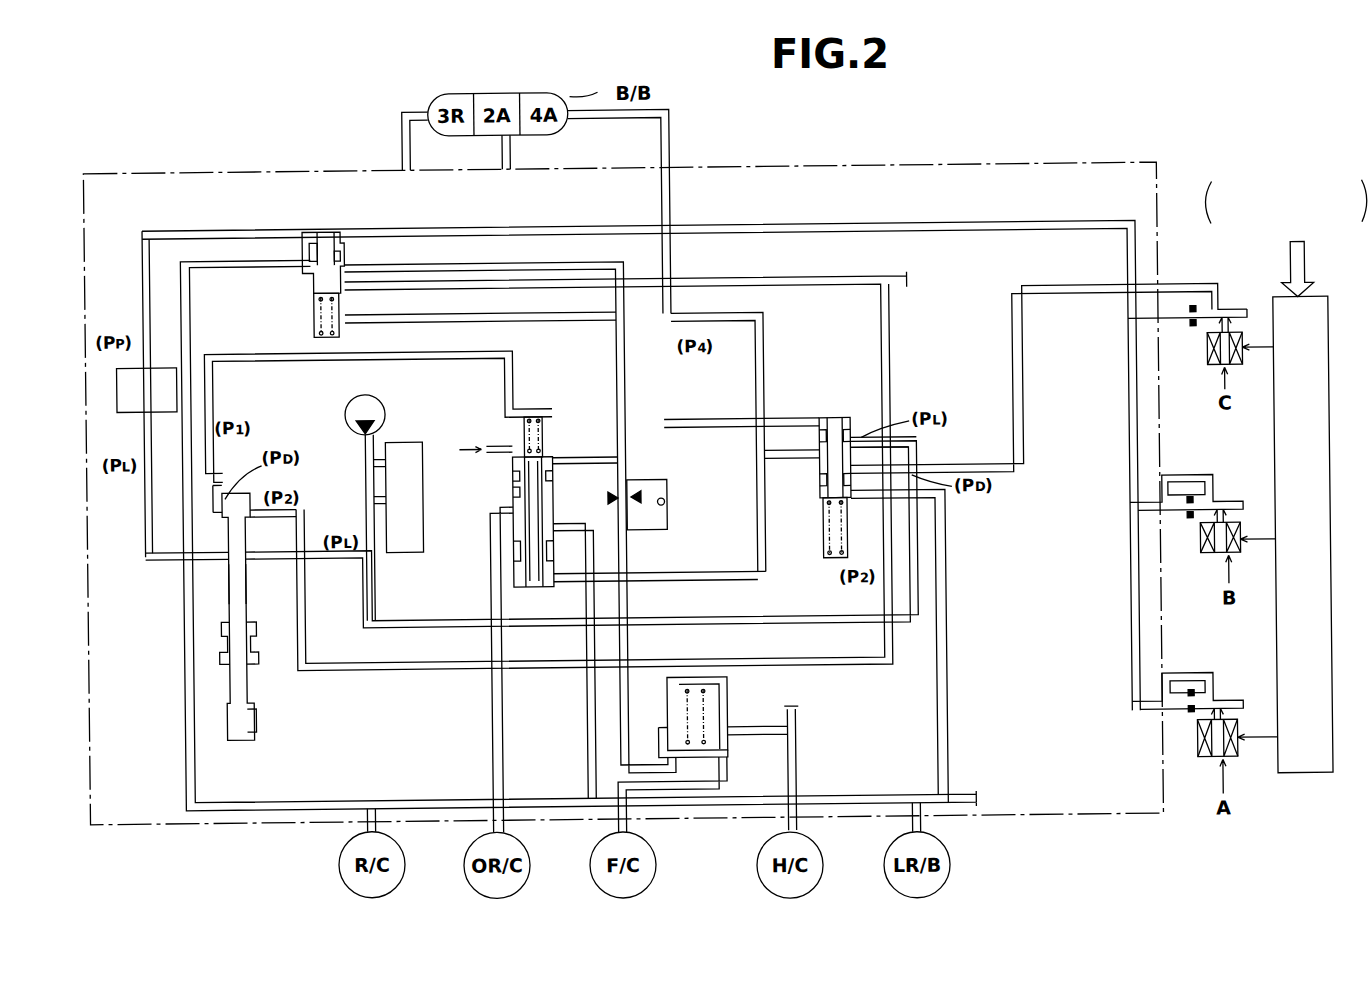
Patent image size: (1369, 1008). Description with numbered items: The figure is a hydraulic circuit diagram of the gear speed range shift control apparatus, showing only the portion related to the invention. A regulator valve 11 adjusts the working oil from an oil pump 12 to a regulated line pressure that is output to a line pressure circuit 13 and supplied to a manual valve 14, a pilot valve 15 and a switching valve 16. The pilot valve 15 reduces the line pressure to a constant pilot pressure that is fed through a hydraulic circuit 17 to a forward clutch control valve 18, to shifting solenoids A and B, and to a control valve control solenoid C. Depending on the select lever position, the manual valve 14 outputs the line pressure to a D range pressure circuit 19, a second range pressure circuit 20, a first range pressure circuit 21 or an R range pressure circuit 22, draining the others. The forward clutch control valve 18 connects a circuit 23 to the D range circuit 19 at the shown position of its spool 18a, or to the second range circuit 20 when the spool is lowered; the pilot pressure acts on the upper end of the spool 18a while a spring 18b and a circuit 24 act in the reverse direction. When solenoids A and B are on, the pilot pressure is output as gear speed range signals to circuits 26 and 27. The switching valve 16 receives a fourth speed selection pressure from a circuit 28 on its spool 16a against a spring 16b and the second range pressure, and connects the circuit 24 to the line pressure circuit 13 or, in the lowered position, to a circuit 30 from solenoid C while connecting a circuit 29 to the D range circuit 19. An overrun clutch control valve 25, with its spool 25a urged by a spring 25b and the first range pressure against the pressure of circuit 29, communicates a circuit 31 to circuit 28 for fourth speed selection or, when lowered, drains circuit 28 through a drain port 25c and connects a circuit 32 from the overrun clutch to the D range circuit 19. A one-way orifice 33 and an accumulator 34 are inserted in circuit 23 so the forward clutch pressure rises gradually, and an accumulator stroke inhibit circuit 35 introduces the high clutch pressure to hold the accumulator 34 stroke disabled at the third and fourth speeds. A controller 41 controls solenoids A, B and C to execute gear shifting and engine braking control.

The regulator valve 11 is at (423, 538).
The oil pump 12 is at (350, 400).
The line pressure circuit 13 is at (145, 560).
The manual valve 14 is at (258, 572).
The pilot valve 15 is at (122, 407).
The switching valve 16 is at (842, 418).
The spool 16a is at (826, 420).
The spring 16b is at (830, 562).
The hydraulic circuit 17 is at (535, 226).
The forward clutch control valve 18 is at (350, 228).
The spool 18a is at (330, 229).
The spring 18b is at (316, 332).
The D range pressure circuit 19 is at (183, 516).
The 2 range pressure circuit 20 is at (498, 288).
The 1 range pressure circuit 21 is at (276, 360).
The R range pressure circuit 22 is at (216, 612).
The circuit 23 is at (524, 262).
The circuit 24 is at (470, 322).
The overrun clutch control valve 25 is at (560, 416).
The spool 25a is at (538, 470).
The spring 25b is at (536, 416).
The drain port 25c is at (500, 488).
The circuit 26 is at (1200, 679).
The circuit 27 is at (1200, 481).
The circuit 28 is at (712, 420).
The circuit 29 is at (728, 572).
The circuit 30 is at (1026, 438).
The circuit 31 is at (496, 445).
The circuit 32 is at (500, 712).
The one-way orifice 33 is at (668, 500).
The accumulator 34 is at (734, 758).
The accumulator stroke inhibit circuit 35 is at (794, 744).
The controller 41 is at (1312, 780).